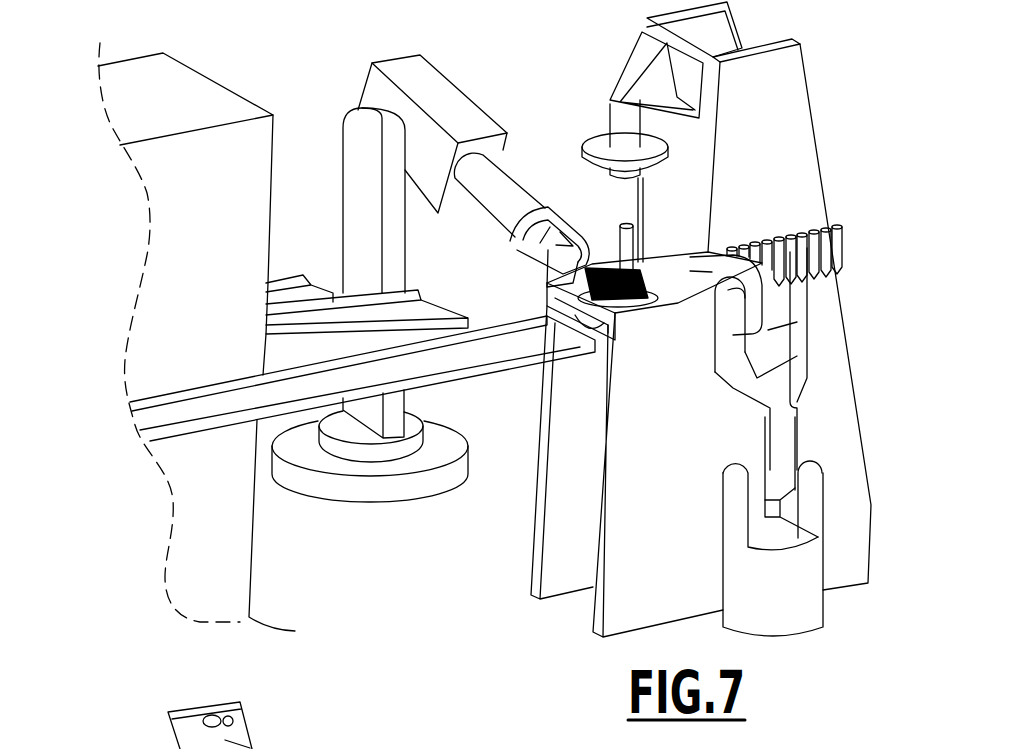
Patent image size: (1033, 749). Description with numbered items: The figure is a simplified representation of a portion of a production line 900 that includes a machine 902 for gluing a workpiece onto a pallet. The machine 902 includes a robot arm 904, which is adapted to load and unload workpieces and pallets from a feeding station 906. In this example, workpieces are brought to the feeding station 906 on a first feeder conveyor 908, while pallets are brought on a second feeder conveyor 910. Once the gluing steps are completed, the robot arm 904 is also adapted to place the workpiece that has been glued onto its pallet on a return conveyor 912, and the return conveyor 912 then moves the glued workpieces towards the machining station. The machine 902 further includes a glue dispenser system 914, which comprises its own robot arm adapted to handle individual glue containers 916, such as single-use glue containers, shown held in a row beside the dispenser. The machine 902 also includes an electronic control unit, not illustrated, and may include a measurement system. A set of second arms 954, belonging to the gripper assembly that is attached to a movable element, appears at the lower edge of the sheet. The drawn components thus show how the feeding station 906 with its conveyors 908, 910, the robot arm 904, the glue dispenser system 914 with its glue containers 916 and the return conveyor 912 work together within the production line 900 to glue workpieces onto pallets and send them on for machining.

The production line 900 is at (80, 206).
The machine 902 is at (770, 108).
The robot arm 904 is at (438, 100).
The feeding station 906 is at (178, 90).
The first feeder conveyor 908 is at (290, 287).
The second feeder conveyor 910 is at (428, 310).
The return conveyor 912 is at (180, 407).
The glue dispenser system 914 is at (783, 393).
The glue containers 916 is at (843, 240).
The second arms 954 is at (240, 735).